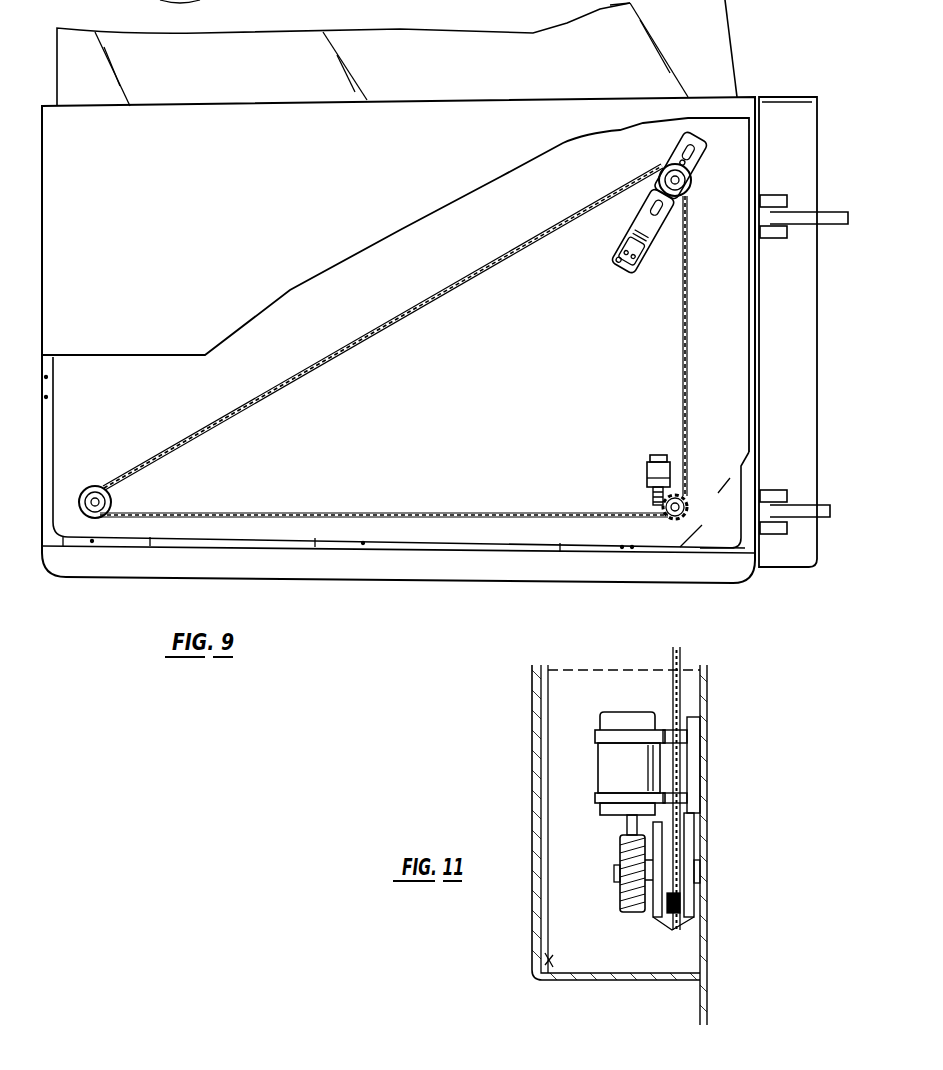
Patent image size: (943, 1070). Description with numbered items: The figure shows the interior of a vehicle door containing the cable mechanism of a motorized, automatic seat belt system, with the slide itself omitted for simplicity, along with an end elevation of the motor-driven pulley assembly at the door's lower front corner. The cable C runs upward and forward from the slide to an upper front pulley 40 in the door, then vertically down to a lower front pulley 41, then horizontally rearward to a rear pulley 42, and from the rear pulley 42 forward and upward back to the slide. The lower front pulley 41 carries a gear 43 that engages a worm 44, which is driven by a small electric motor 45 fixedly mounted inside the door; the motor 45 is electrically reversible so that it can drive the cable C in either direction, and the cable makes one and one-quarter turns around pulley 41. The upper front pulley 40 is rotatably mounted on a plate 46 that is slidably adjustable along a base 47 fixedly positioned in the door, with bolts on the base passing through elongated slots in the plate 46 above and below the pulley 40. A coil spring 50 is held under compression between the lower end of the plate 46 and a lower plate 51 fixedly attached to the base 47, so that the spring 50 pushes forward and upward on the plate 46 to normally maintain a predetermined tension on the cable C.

In FIG. 9, the upper front pulley 40 is at (661, 167).
In FIG. 9, the lower front pulley 41 is at (690, 504).
In FIG. 11, the lower front pulley 41 is at (672, 926).
In FIG. 9, the rear pulley 42 is at (113, 498).
In FIG. 9, the gear 43 is at (690, 513).
In FIG. 11, the gear 43 is at (620, 893).
In FIG. 9, the worm 44 is at (650, 509).
In FIG. 11, the worm 44 is at (620, 853).
In FIG. 9, the electric motor 45 is at (648, 470).
In FIG. 11, the electric motor 45 is at (640, 775).
In FIG. 9, the plate 46 is at (700, 157).
In FIG. 9, the base 47 is at (640, 277).
In FIG. 9, the coil spring 50 is at (635, 227).
In FIG. 9, the lower plate 51 is at (610, 263).
In FIG. 9, the cable C is at (373, 337).
In FIG. 11, the cable C is at (672, 656).